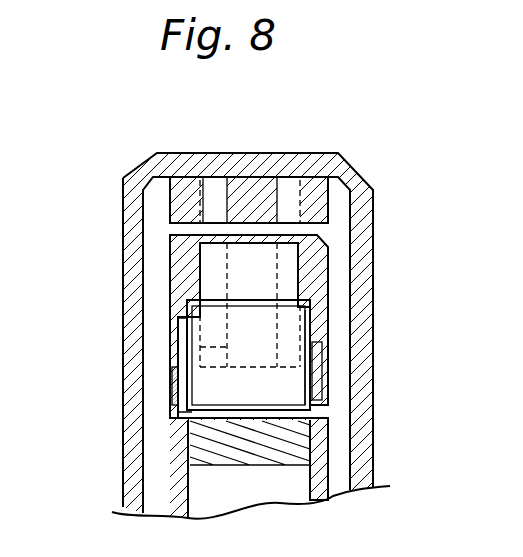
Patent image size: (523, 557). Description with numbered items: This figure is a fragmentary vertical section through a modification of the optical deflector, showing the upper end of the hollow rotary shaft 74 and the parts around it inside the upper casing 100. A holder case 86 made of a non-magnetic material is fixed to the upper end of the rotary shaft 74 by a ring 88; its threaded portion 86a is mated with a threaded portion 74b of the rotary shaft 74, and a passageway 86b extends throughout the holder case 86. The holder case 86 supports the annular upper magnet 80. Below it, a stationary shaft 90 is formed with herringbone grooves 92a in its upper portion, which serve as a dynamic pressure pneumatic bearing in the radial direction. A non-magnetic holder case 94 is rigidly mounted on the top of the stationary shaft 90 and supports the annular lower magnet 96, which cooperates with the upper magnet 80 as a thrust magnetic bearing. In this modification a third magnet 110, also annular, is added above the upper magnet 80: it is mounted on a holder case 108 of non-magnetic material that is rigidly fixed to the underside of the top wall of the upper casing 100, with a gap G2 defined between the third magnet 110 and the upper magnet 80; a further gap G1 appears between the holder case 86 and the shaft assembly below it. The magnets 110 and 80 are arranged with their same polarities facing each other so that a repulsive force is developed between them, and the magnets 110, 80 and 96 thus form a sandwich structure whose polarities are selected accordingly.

The hollow rotary shaft 74 is at (143, 510).
The threaded portion 74b is at (187, 337).
The upper magnet 80 is at (217, 282).
The holder case 86 is at (318, 262).
The threaded portion 86a is at (330, 333).
The passageway 86b is at (253, 242).
The ring 88 is at (325, 377).
The stationary shaft 90 is at (213, 480).
The herringbone grooves 92a is at (305, 443).
The holder case 94 is at (212, 388).
The lower magnet 96 is at (200, 347).
The upper casing 100 is at (130, 423).
The holder case 108 is at (318, 200).
The third magnet 110 is at (207, 200).
The gap G1 is at (310, 305).
The gap G2 is at (293, 229).